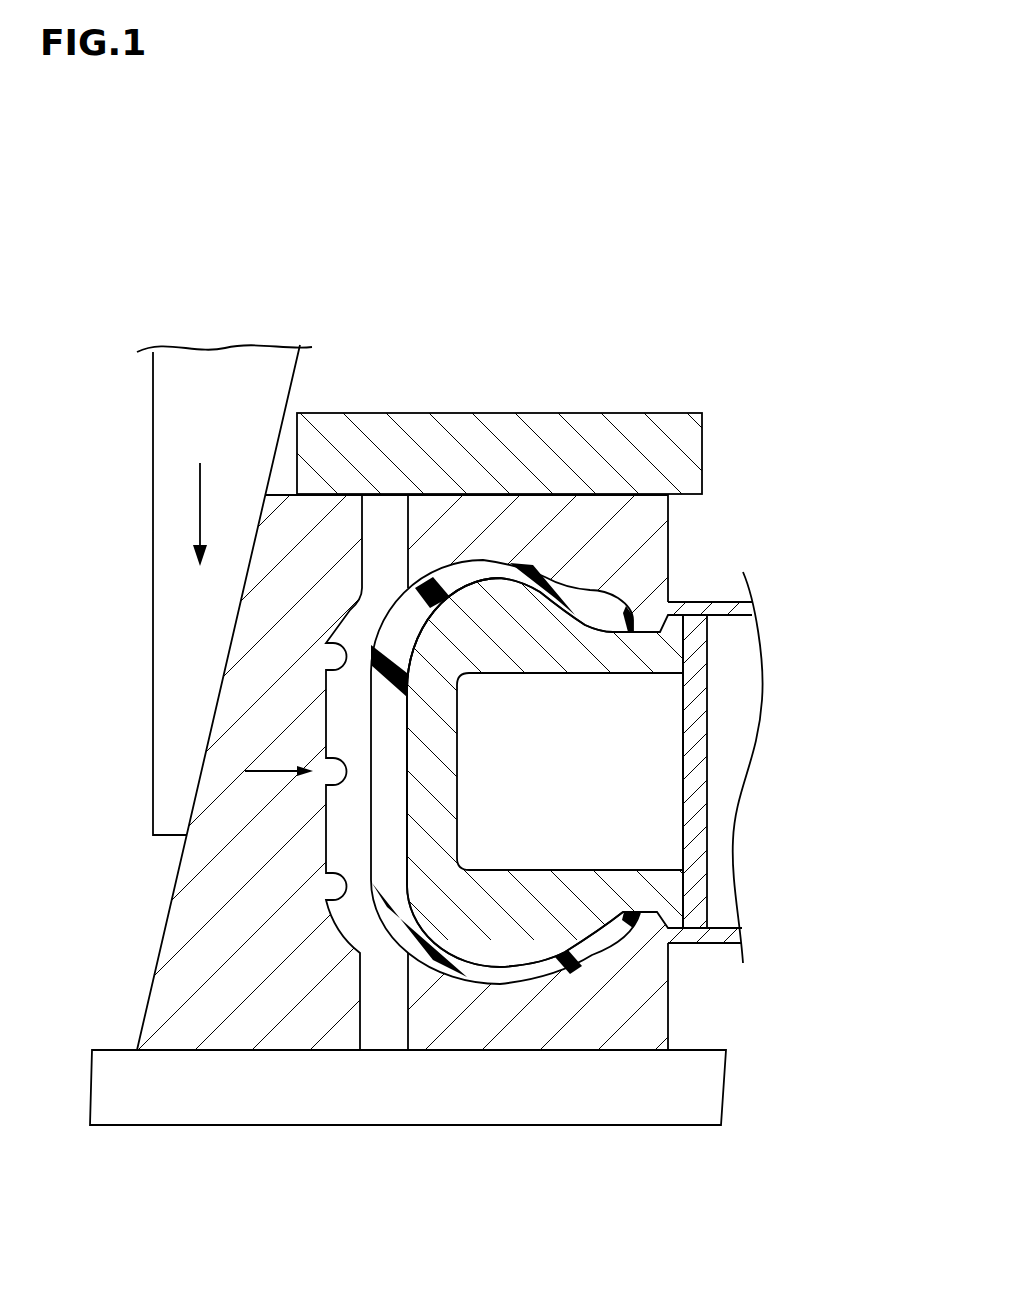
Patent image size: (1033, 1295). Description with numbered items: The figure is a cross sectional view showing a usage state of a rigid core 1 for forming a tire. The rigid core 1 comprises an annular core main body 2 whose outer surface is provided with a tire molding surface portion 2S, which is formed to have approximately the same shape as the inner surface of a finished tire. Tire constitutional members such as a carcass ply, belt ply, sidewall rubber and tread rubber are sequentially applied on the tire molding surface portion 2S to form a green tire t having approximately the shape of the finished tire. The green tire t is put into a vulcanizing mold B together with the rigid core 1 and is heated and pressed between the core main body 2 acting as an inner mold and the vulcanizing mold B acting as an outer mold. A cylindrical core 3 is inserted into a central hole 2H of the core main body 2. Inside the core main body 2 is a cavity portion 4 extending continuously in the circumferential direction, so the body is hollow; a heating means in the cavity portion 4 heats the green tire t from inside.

The rigid core 1 is at (790, 700).
The core main body 2 is at (440, 751).
The tire molding surface portion 2S is at (407, 718).
The central hole 2H is at (712, 650).
The cylindrical core 3 is at (705, 839).
The cavity portion 4 is at (585, 793).
The vulcanizing mold B is at (573, 527).
The green tire t is at (387, 852).